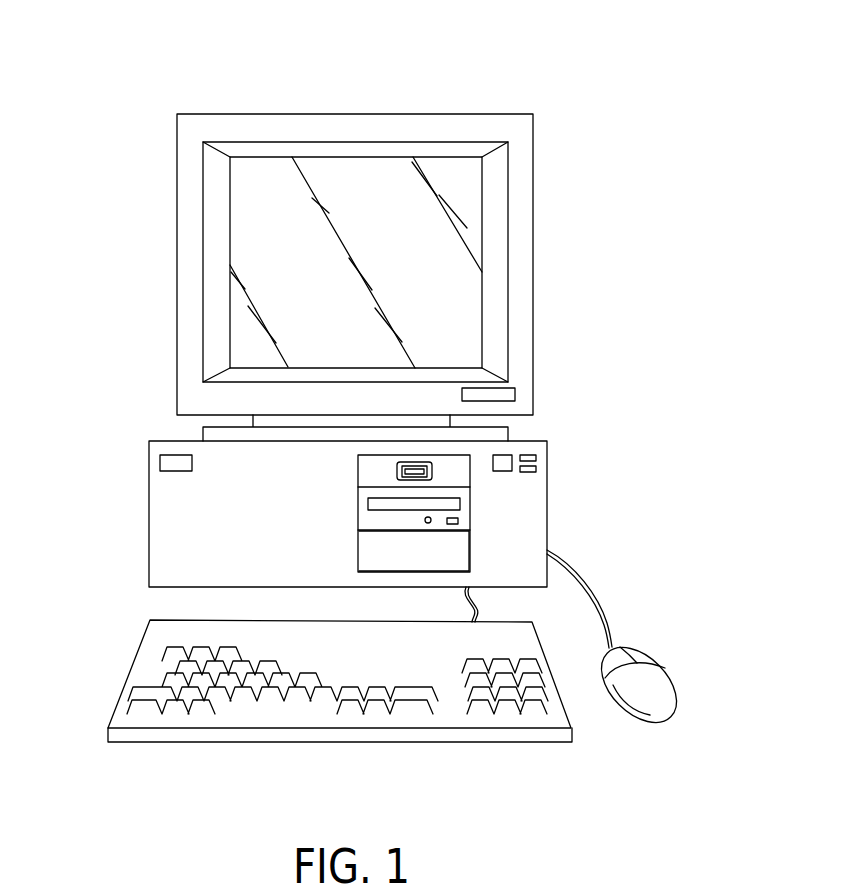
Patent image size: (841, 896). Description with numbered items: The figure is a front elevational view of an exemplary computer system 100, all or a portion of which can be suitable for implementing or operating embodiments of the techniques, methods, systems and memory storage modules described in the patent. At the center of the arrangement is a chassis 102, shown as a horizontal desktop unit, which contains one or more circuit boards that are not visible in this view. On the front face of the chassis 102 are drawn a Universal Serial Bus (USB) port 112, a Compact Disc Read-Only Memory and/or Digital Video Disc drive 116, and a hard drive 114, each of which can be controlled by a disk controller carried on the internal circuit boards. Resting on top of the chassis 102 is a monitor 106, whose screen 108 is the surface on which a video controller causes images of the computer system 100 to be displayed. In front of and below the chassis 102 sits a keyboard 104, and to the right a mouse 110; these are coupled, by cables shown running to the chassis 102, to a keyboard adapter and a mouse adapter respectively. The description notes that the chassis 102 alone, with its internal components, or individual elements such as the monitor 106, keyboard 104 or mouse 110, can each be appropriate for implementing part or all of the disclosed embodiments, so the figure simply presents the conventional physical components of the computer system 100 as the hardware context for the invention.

The computer system 100 is at (527, 93).
The chassis 102 is at (149, 515).
The keyboard 104 is at (128, 668).
The monitor 106 is at (250, 114).
The screen 108 is at (275, 267).
The mouse 110 is at (655, 677).
The Universal Serial Bus (USB) port 112 is at (432, 467).
The hard drive 114 is at (462, 548).
The CD-ROM and/or DVD drive 116 is at (462, 510).